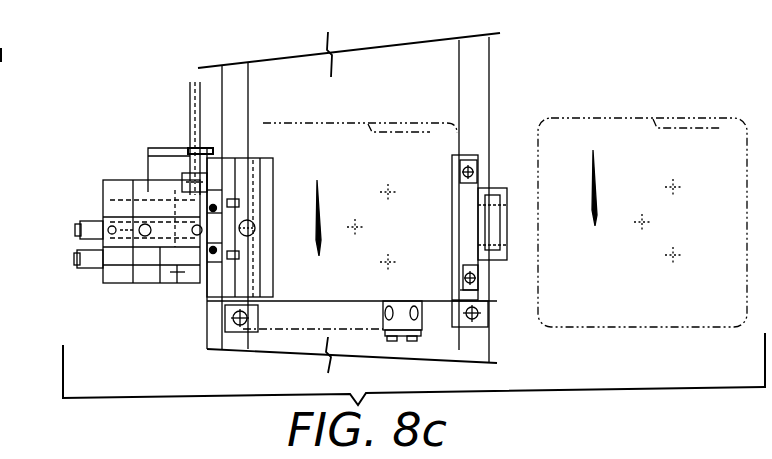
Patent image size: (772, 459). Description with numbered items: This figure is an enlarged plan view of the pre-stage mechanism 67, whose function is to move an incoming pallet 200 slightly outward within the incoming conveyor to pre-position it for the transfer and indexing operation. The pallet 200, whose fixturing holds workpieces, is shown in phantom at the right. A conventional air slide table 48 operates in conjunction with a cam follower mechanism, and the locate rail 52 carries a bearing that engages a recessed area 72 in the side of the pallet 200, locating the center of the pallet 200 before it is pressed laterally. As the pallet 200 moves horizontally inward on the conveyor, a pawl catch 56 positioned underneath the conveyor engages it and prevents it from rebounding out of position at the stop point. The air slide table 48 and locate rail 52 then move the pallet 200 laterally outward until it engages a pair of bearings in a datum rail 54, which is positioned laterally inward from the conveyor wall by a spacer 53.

The air slide table 48 is at (92, 184).
The locate rail 52 is at (250, 163).
The spacer 53 is at (487, 194).
The datum rail 54 is at (464, 165).
The pawl catch 56 is at (423, 317).
The pre-stage mechanism 67 is at (154, 95).
The recessed area 72 is at (542, 223).
The pallet 200 is at (724, 170).